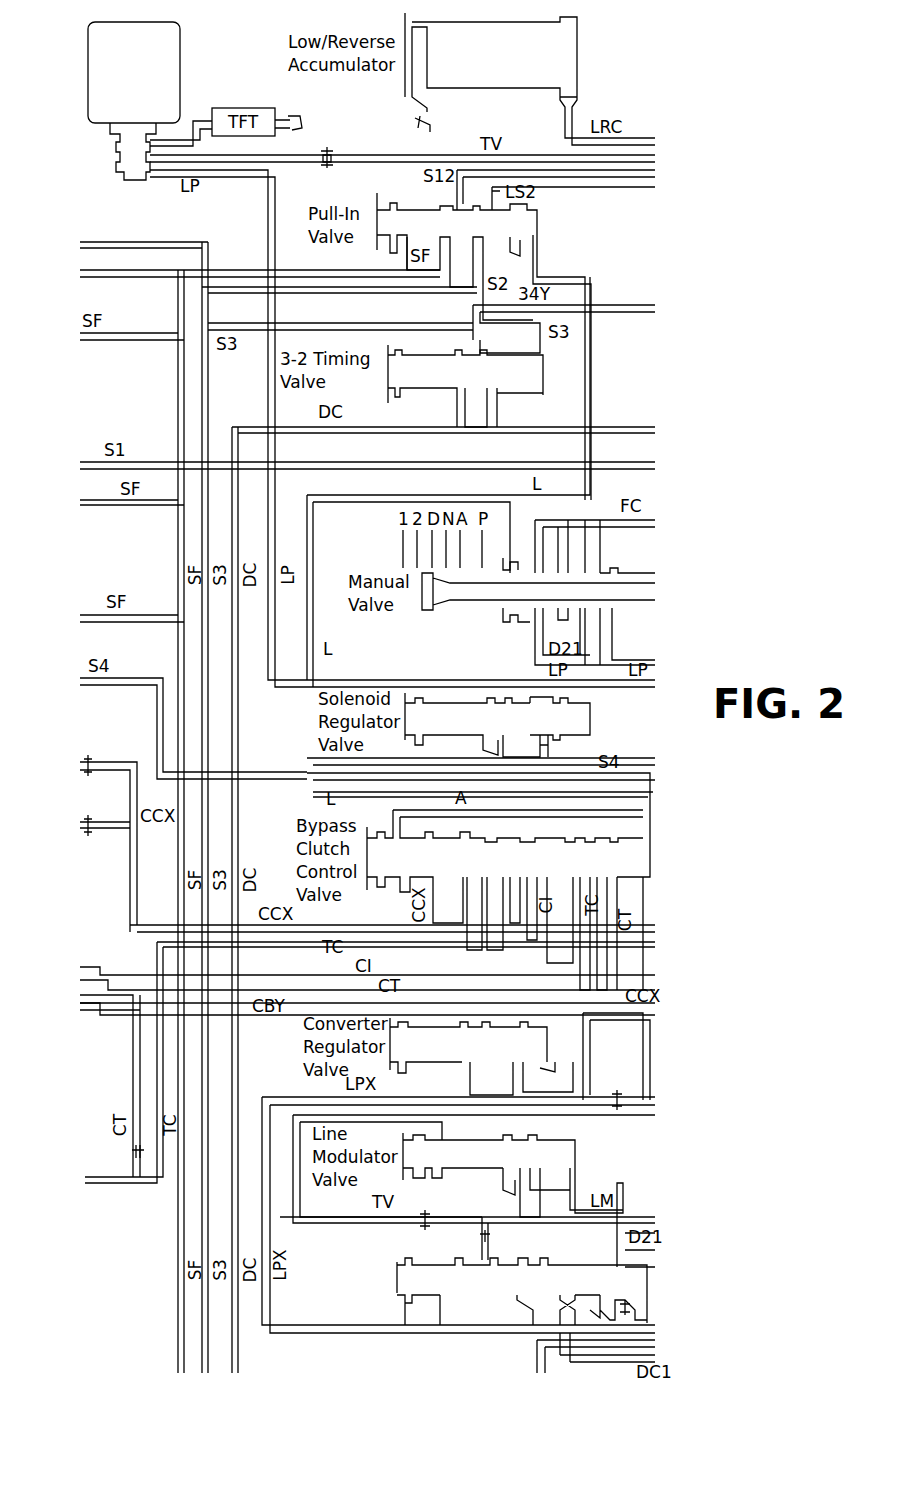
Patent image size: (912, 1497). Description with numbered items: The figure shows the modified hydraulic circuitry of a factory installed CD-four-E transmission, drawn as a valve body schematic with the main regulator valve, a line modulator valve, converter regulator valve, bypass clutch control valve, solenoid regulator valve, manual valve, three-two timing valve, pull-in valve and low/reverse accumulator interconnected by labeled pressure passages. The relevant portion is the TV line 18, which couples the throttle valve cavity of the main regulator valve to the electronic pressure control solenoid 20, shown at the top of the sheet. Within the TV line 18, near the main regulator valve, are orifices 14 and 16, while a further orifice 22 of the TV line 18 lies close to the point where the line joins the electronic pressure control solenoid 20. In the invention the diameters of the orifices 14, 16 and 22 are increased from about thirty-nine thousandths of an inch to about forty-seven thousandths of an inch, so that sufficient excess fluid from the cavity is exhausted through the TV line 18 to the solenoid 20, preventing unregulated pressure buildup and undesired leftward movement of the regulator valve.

The orifice 14 is at (490, 1237).
The orifice 16 is at (432, 1212).
The TV line 18 is at (428, 156).
The electronic pressure control solenoid 20 is at (180, 72).
The orifice 22 is at (333, 150).